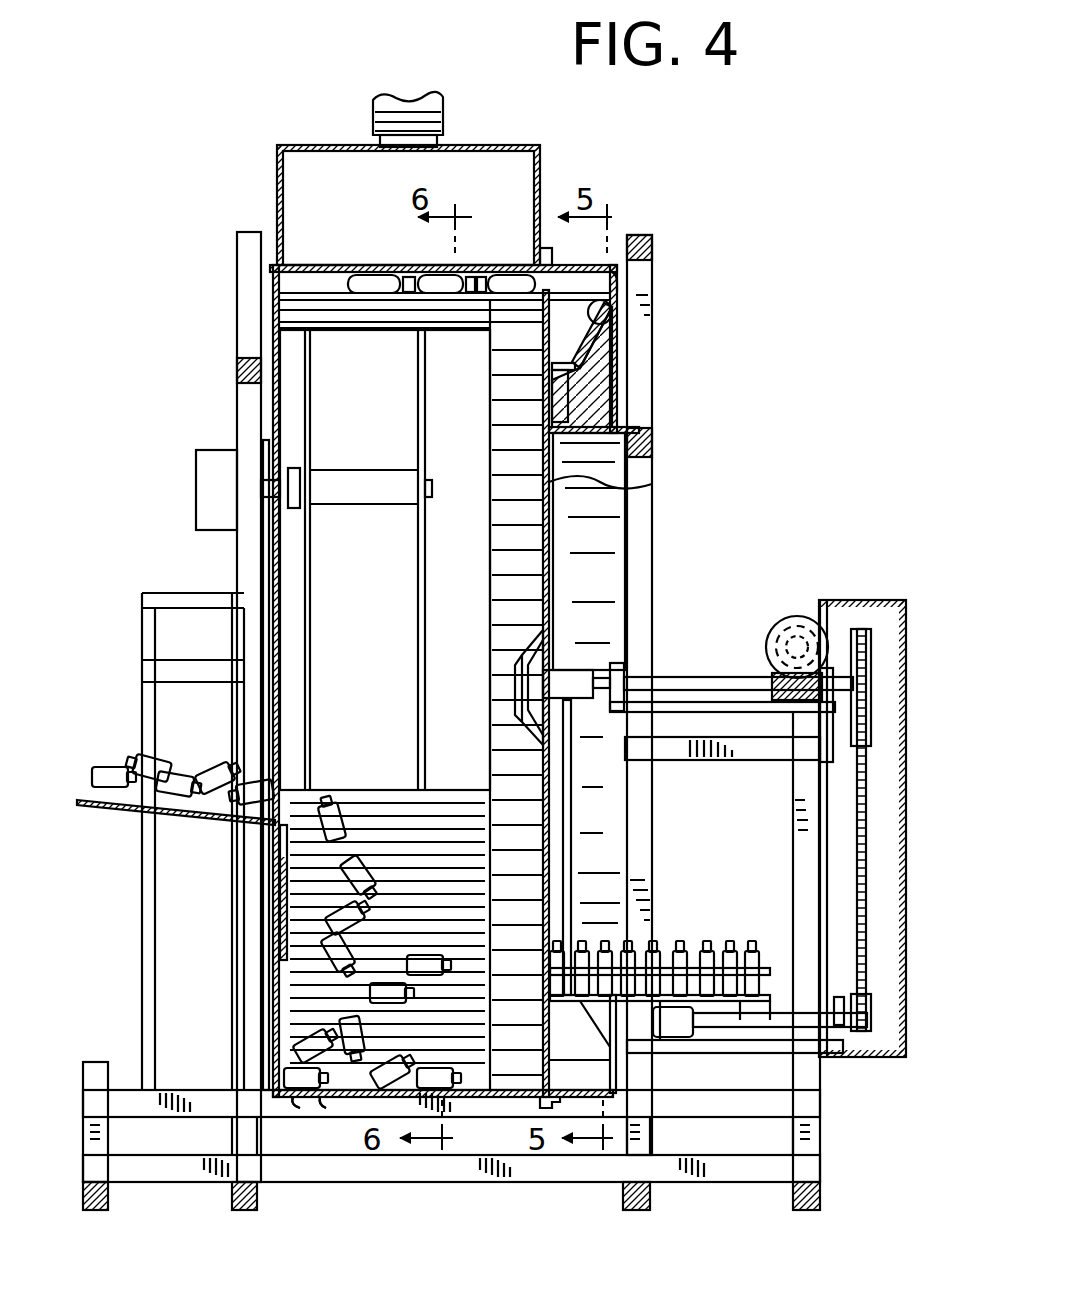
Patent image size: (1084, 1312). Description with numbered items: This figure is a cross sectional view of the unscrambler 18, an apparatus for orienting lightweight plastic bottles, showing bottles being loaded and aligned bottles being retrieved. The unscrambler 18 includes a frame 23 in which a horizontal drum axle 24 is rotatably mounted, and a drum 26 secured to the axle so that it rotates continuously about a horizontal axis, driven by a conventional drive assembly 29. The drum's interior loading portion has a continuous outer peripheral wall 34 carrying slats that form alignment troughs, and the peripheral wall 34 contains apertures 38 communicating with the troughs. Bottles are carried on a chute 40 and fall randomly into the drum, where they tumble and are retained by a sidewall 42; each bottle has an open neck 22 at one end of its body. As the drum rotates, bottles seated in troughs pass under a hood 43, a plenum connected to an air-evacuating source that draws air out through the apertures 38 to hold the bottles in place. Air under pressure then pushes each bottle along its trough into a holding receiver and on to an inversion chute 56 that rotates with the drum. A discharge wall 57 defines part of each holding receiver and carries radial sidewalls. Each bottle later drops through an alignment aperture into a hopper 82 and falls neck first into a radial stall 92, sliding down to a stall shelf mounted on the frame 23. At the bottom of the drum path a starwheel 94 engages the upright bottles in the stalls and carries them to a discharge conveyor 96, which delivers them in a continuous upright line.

The unscrambler 18 is at (237, 250).
The open neck 22 is at (700, 955).
The frame 23 is at (656, 256).
The horizontal drum axle 24 is at (575, 680).
The drum 26 is at (268, 557).
The drive assembly 29 is at (905, 872).
The outer peripheral wall 34 is at (343, 1097).
The apertures 38 is at (322, 1108).
The chute 40 is at (105, 812).
The sidewall 42 is at (283, 962).
The hood 43 is at (548, 158).
The inversion chute 56 is at (616, 258).
The discharge wall 57 is at (605, 488).
The hopper 82 is at (612, 298).
The radial stall 92 is at (568, 392).
The starwheel 94 is at (695, 945).
The discharge conveyor 96 is at (750, 1002).